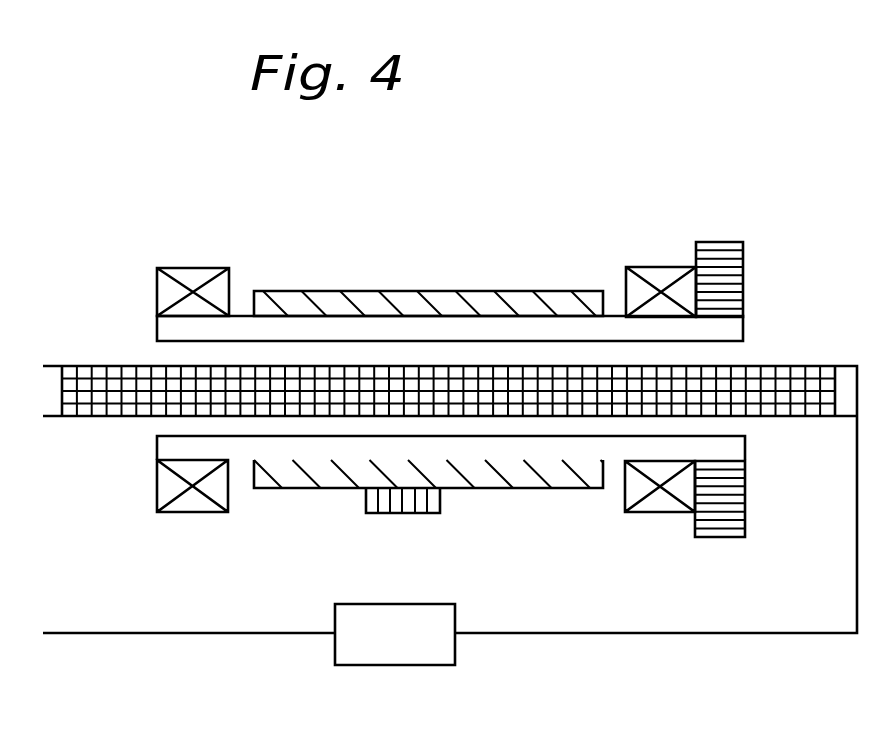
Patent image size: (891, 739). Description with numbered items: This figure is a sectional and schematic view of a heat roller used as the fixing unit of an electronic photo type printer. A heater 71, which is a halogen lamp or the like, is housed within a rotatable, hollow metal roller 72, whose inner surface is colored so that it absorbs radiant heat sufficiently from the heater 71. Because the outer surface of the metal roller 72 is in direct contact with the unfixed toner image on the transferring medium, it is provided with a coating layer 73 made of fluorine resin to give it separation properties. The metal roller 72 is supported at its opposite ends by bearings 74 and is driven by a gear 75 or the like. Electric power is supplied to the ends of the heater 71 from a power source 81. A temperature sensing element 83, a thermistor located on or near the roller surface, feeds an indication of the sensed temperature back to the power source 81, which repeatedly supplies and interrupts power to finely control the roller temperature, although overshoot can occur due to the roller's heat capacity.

The heater 71 is at (770, 366).
The metal roller 72 is at (745, 437).
The coating layer 73 is at (297, 291).
The bearings 74 is at (197, 512).
The gear 75 is at (733, 538).
The power source 81 is at (422, 666).
The temperature sensing element 83 is at (432, 513).